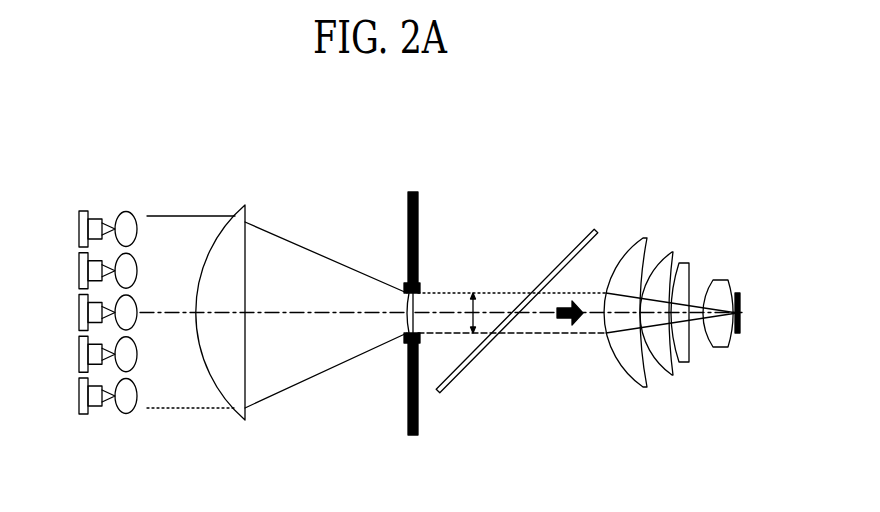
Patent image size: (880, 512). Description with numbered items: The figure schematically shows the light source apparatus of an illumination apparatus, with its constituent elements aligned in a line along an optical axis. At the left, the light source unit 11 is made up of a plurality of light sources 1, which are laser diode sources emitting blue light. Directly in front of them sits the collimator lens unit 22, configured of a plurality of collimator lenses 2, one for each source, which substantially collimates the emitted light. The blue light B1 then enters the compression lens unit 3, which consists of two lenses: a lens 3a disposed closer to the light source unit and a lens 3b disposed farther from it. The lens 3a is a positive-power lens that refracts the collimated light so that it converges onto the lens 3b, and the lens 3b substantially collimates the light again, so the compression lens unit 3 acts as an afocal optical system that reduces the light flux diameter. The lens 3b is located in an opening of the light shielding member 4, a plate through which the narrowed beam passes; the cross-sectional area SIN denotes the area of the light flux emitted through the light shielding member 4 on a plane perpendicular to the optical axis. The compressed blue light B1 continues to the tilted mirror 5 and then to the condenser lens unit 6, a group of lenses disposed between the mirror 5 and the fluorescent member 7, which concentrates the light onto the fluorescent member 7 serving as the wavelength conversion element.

The light source 1 is at (71, 285).
The light source unit 11 is at (82, 210).
The collimator lens 2 is at (139, 285).
The collimator lens unit 22 is at (127, 210).
The compression lens unit 3 is at (308, 336).
The lens 3a is at (240, 420).
The lens 3b is at (407, 343).
The light shielding member 4 is at (419, 221).
The mirror 5 is at (588, 233).
The condenser lens unit 6 is at (737, 233).
The fluorescent member 7 is at (742, 313).
The blue light B1 is at (560, 320).
The cross-sectional area SIN is at (476, 307).